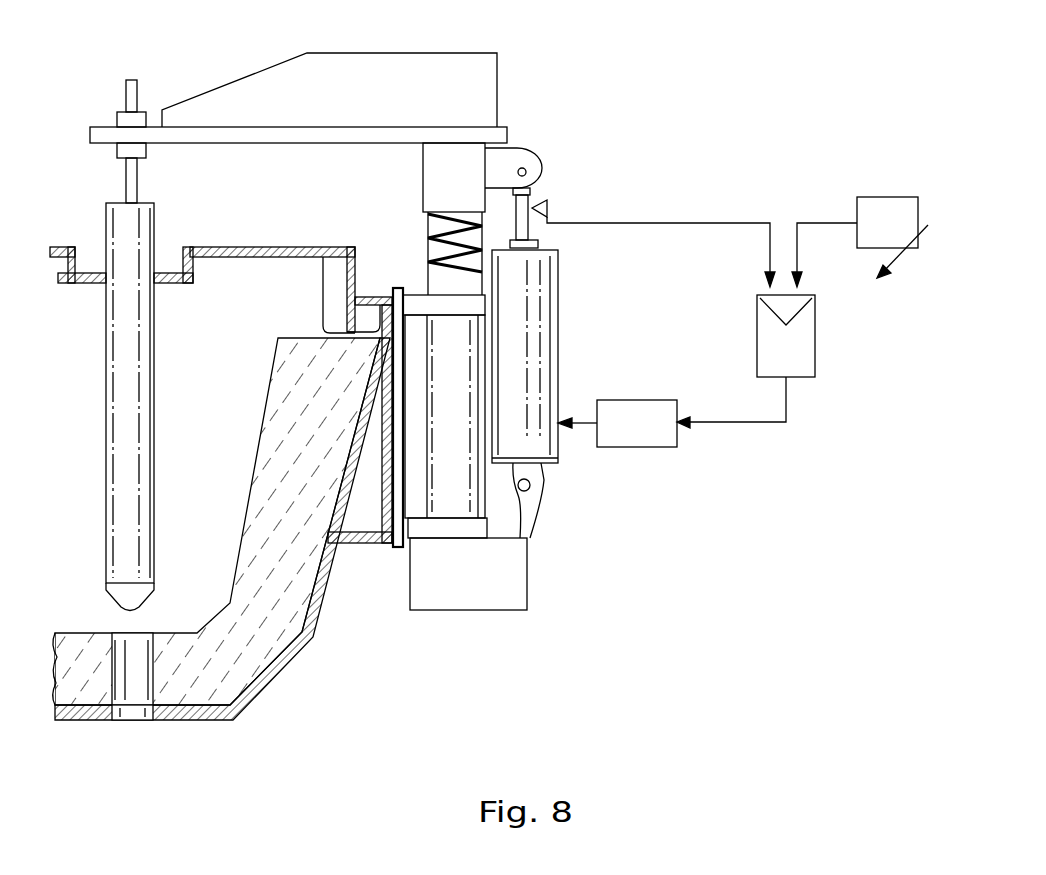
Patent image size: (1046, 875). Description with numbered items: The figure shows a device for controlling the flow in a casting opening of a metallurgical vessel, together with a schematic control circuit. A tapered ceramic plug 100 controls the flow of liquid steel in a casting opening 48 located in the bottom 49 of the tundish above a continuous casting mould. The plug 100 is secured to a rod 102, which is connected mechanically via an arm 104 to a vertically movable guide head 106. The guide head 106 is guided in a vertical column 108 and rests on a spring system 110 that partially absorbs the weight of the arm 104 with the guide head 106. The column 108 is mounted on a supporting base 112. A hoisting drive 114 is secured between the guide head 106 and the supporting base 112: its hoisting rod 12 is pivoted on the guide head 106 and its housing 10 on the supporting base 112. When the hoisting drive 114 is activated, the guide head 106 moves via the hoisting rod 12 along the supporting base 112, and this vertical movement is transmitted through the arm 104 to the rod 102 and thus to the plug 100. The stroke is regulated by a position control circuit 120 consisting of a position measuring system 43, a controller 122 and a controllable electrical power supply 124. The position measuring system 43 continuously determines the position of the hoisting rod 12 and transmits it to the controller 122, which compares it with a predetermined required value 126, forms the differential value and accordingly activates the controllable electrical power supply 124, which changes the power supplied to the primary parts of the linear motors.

The housing 10 is at (560, 452).
The hoisting rod 12 is at (525, 205).
The position measuring system 43 is at (549, 210).
The casting opening 48 is at (140, 650).
The bottom 49 is at (83, 667).
The plug 100 is at (118, 590).
The rod 102 is at (131, 185).
The arm 104 is at (200, 133).
The guide head 106 is at (465, 178).
The column 108 is at (470, 490).
The spring system 110 is at (428, 245).
The supporting base 112 is at (507, 585).
The hoisting drive 114 is at (538, 312).
The position control circuit 120 is at (795, 172).
The controller 122 is at (797, 358).
The controllable electrical power supply 124 is at (660, 433).
The required value 126 is at (867, 213).